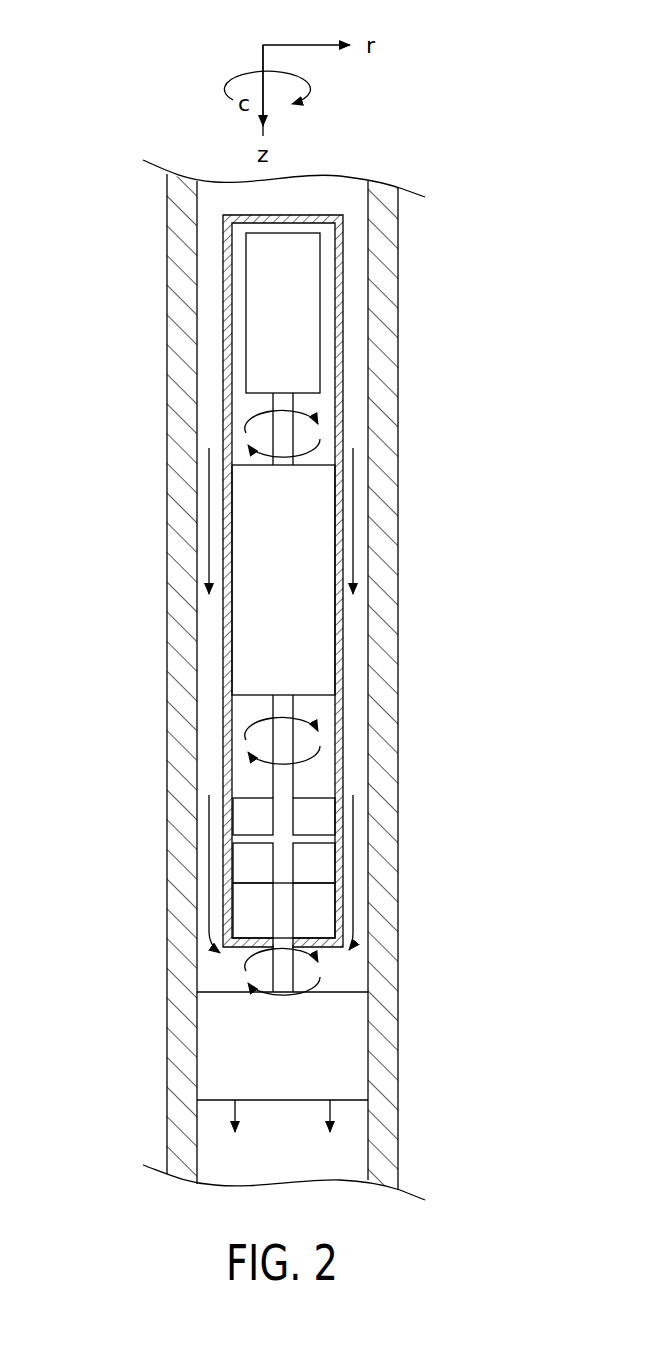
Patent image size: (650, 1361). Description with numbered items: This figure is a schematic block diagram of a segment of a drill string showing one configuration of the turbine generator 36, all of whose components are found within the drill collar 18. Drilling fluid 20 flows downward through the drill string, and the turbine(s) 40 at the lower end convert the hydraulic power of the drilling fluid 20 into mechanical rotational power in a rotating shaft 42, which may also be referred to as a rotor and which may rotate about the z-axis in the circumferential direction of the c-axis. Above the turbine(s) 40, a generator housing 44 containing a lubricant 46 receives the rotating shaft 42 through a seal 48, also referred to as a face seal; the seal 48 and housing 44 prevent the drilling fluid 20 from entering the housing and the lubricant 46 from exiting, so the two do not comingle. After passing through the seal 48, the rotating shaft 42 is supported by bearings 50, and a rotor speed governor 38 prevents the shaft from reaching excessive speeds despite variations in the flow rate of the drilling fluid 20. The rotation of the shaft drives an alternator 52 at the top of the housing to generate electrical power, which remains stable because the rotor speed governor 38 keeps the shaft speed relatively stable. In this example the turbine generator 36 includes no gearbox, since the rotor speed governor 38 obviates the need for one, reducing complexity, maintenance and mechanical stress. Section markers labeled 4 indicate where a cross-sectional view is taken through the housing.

The turbine generator 36 is at (96, 176).
The drill collar 18 is at (388, 505).
The drilling fluid 20 is at (311, 206).
The generator housing 44 is at (340, 667).
The alternator 52 is at (300, 363).
The lubricant 46 is at (320, 447).
The rotor speed governor 38 is at (265, 500).
The bearings 50 is at (237, 820).
The seal 48 is at (318, 907).
The rotating shaft 42 is at (283, 768).
The turbines 40 is at (210, 1028).
The section line for FIG. 4 is at (155, 682).